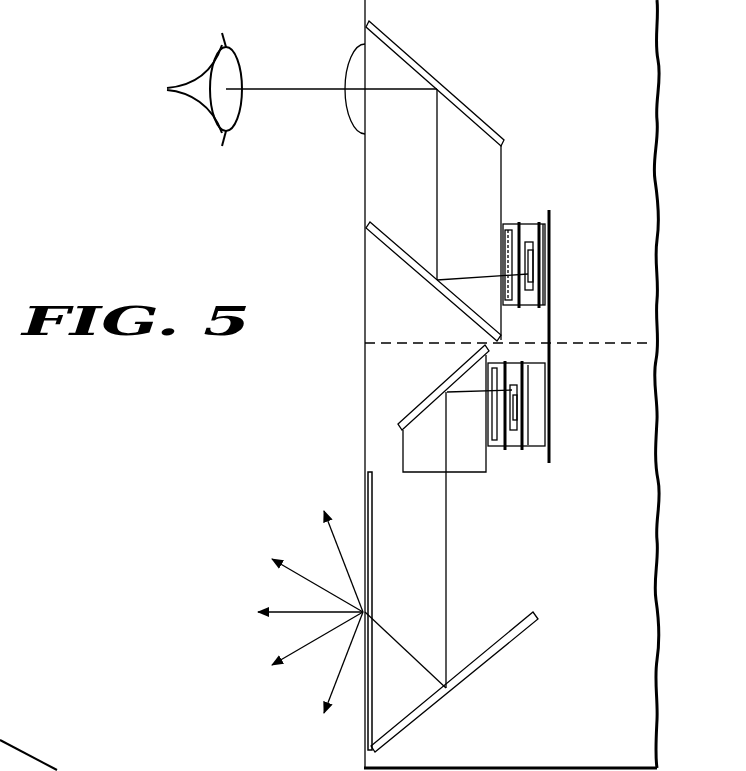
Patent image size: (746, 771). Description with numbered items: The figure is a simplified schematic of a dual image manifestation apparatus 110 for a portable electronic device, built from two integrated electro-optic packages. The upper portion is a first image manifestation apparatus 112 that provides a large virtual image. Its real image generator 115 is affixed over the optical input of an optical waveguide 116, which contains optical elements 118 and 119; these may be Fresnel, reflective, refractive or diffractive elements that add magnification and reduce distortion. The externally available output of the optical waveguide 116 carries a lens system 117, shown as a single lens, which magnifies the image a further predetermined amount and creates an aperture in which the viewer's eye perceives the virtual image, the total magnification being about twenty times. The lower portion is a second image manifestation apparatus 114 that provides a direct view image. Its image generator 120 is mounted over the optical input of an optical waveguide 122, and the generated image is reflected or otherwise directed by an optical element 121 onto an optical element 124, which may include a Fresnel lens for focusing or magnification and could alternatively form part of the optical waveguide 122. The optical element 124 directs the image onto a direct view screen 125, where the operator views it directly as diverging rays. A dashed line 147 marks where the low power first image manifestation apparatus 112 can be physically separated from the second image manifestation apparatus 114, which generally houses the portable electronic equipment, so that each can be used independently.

The dual image manifestation apparatus 110 is at (157, 384).
The first image manifestation apparatus 112 is at (310, 197).
The second image manifestation apparatus 114 is at (247, 515).
The real image generator 115 is at (541, 198).
The optical waveguide 116 is at (502, 158).
The lens system 117 is at (347, 118).
The optical element 118 is at (431, 284).
The optical element 119 is at (437, 77).
The image generator 120 is at (540, 473).
The optical element 121 is at (443, 387).
The optical waveguide 122 is at (487, 472).
The optical element 124 is at (500, 650).
The direct view screen 125 is at (363, 492).
The line 147 is at (603, 342).